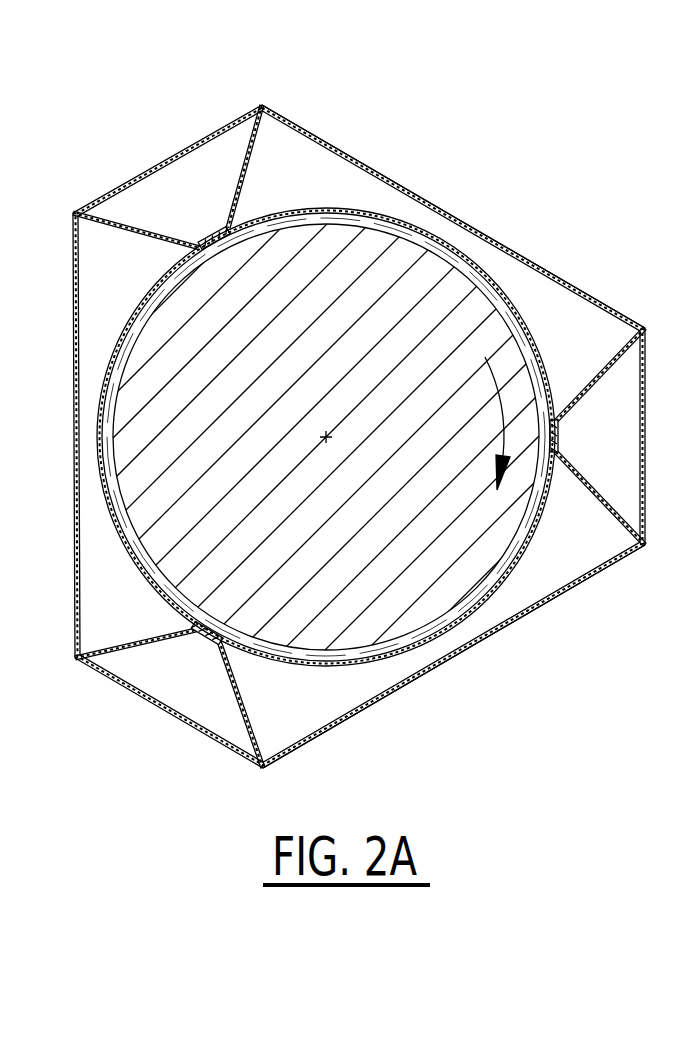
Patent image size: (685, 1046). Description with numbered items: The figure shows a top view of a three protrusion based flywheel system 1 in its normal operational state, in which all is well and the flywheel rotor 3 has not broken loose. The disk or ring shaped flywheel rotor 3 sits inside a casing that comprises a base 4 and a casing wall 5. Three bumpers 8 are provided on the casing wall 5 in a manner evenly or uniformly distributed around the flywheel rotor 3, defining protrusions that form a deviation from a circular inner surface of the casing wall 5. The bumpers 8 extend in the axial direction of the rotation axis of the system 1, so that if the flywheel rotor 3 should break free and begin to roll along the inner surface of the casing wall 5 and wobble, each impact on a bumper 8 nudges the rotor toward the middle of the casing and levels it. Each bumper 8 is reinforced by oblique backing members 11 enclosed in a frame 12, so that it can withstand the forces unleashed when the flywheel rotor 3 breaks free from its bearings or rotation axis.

The flywheel system 1 is at (476, 132).
The flywheel rotor 3 is at (433, 277).
The base 4 is at (333, 727).
The casing wall 5 is at (447, 635).
The bumper 8 is at (208, 238).
The oblique backing member 11 is at (250, 170).
The frame 12 is at (287, 120).